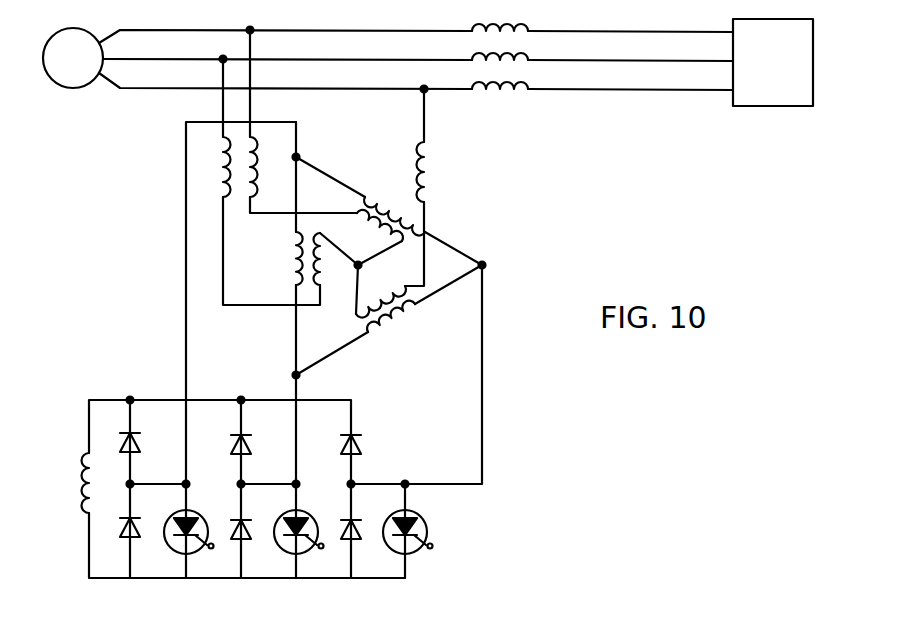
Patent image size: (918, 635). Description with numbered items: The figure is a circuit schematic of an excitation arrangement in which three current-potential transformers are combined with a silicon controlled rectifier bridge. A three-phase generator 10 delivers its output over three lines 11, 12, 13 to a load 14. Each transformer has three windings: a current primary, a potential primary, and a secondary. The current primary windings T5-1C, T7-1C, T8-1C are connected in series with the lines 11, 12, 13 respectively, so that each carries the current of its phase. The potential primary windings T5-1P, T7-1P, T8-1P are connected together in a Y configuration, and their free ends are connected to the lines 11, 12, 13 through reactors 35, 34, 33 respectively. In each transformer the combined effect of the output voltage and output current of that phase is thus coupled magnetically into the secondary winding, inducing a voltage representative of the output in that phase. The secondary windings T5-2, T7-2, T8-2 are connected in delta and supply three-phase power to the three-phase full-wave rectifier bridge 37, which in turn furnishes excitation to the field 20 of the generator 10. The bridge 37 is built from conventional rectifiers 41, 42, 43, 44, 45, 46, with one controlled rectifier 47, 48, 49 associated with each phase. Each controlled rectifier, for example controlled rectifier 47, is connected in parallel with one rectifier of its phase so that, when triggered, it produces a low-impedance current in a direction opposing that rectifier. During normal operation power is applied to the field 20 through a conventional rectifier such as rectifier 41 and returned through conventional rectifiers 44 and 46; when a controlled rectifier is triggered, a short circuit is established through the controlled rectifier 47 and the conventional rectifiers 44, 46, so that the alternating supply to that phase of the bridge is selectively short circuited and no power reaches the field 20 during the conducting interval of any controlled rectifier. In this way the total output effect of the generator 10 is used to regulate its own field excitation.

The generator 10 is at (61, 26).
The line 11 is at (158, 28).
The line 12 is at (158, 57).
The line 13 is at (158, 86).
The load 14 is at (769, 17).
The field 20 is at (63, 508).
The reactor 33 is at (426, 180).
The reactor 34 is at (221, 196).
The reactor 35 is at (251, 179).
The three-phase full-wave rectifier bridge 37 is at (250, 621).
The conventional rectifier 41 is at (141, 443).
The conventional rectifier 42 is at (133, 540).
The conventional rectifier 43 is at (252, 445).
The conventional rectifier 44 is at (244, 541).
The conventional rectifier 45 is at (362, 445).
The conventional rectifier 46 is at (354, 541).
The controlled rectifier 47 is at (174, 515).
The controlled rectifier 48 is at (280, 515).
The controlled rectifier 49 is at (390, 515).
The current primary winding T5-1C is at (505, 22).
The current primary winding T7-1C is at (513, 53).
The current primary winding T8-1C is at (513, 84).
The potential primary winding T5-1P is at (407, 238).
The potential primary winding T7-1P is at (322, 290).
The potential primary winding T8-1P is at (370, 303).
The secondary winding T5-2 is at (375, 195).
The secondary winding T7-2 is at (298, 268).
The secondary winding T8-2 is at (392, 324).